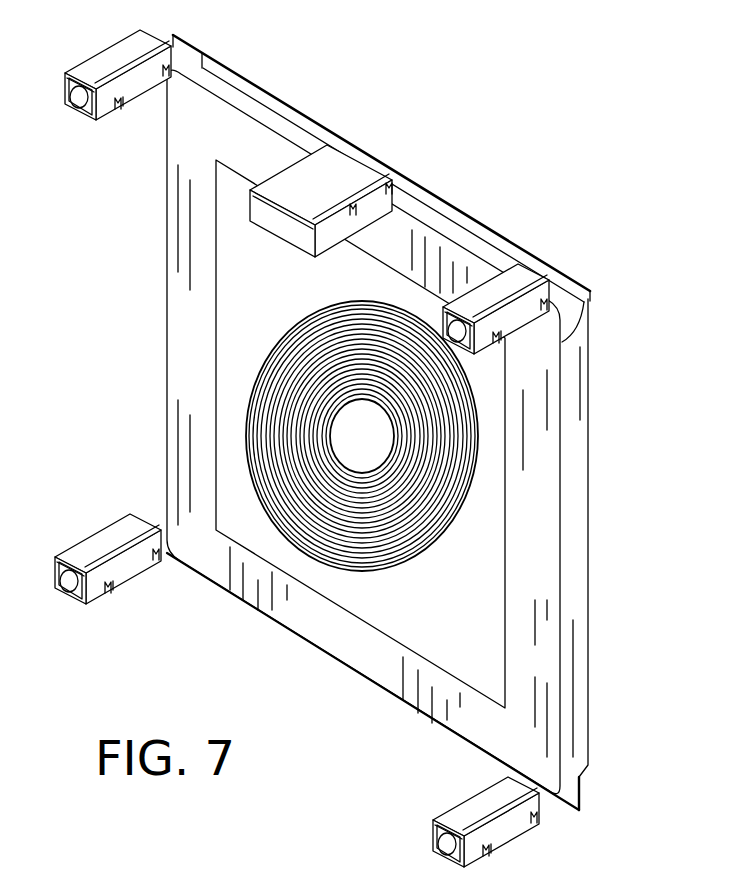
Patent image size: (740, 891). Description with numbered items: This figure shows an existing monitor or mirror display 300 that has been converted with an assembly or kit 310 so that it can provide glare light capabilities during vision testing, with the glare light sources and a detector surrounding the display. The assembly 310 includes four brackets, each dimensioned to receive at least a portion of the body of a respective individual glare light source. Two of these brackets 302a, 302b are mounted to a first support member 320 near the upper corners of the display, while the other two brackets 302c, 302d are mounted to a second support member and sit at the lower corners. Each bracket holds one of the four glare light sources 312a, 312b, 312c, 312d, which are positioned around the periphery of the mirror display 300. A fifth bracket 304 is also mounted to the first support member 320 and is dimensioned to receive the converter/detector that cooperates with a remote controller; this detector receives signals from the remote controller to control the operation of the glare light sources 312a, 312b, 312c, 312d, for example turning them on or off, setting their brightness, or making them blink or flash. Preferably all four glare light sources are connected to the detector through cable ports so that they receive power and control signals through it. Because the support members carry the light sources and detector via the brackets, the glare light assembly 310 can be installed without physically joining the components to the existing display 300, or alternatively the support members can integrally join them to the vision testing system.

The mirror display 300 is at (164, 381).
The assembly 310 is at (607, 202).
The fifth bracket 304 is at (405, 198).
The first support member 320 is at (325, 190).
The glare light source 312a is at (110, 66).
The glare light source 312b is at (490, 290).
The glare light source 312c is at (100, 542).
The glare light source 312d is at (480, 807).
The bracket 302a is at (137, 92).
The bracket 302b is at (522, 327).
The bracket 302c is at (130, 573).
The bracket 302d is at (513, 833).